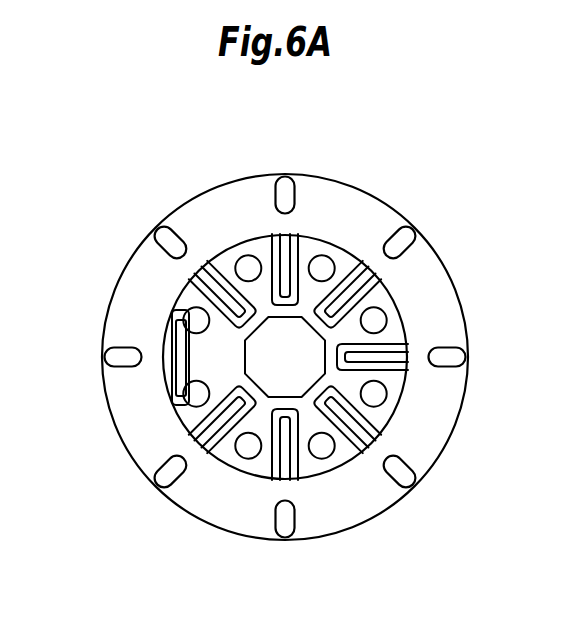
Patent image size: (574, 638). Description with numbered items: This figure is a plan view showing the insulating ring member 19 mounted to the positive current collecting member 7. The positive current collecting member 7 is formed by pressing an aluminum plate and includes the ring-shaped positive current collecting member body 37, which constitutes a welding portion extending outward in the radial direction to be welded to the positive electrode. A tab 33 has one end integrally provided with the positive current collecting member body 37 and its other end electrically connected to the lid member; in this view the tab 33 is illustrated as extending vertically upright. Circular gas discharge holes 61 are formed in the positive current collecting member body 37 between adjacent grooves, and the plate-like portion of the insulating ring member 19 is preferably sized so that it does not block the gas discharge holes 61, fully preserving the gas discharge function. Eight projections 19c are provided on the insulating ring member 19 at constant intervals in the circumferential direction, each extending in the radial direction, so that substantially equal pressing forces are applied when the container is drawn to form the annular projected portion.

The insulating ring member 19 is at (424, 171).
The projections 19c is at (287, 190).
The positive current collecting member 7 is at (305, 245).
The tab 33 is at (181, 343).
The positive current collecting member body 37 is at (208, 393).
The gas discharge holes 61 is at (248, 265).